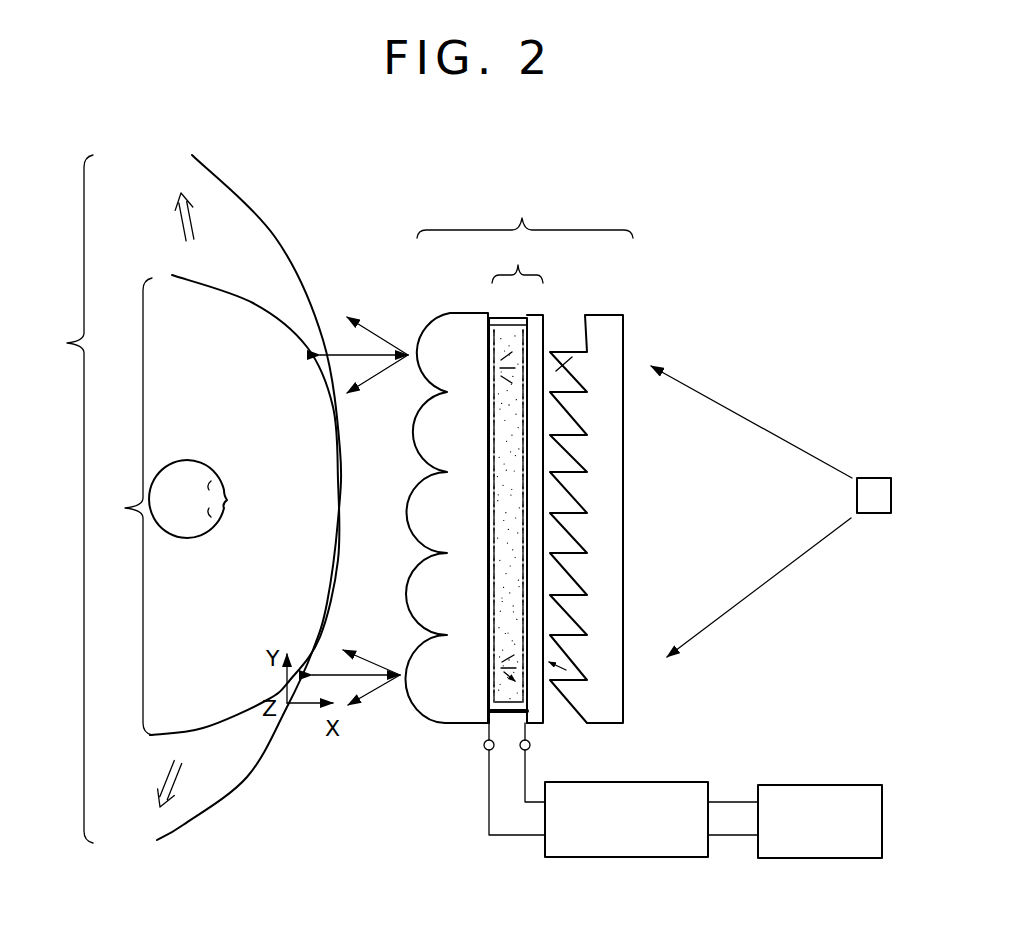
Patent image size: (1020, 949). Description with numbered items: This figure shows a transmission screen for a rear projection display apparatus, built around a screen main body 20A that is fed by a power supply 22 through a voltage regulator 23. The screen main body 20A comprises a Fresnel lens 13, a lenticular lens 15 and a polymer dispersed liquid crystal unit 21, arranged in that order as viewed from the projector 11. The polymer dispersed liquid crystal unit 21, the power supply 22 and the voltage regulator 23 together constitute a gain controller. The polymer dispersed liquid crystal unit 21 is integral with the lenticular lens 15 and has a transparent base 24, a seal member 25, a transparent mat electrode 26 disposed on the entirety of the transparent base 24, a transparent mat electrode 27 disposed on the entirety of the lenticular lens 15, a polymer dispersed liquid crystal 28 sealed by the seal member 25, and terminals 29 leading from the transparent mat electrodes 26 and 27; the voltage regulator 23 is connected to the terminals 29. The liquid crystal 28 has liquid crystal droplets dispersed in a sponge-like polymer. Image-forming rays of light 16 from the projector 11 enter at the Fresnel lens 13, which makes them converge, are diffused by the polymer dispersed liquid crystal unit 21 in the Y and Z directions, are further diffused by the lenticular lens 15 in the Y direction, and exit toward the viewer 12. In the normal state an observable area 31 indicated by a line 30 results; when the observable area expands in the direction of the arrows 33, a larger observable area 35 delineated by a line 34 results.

The projector 11 is at (876, 478).
The viewer 12 is at (187, 540).
The Fresnel lens 13 is at (605, 315).
The lenticular lens 15 is at (463, 313).
The image-forming rays of light 16 is at (757, 421).
The screen main body 20A is at (525, 212).
The polymer dispersed liquid crystal unit 21 is at (517, 257).
The power supply 22 is at (822, 785).
The voltage regulator 23 is at (628, 782).
The transparent base 24 is at (533, 313).
The seal member 25 is at (507, 318).
The transparent mat electrode 26 is at (528, 346).
The transparent mat electrode 27 is at (497, 405).
The polymer dispersed liquid crystal 28 is at (505, 660).
The terminals 29 is at (484, 746).
The line 30 is at (252, 306).
The observable area 31 is at (120, 506).
The arrows 33 is at (205, 500).
The line 34 is at (277, 237).
The observable area 35 is at (56, 499).